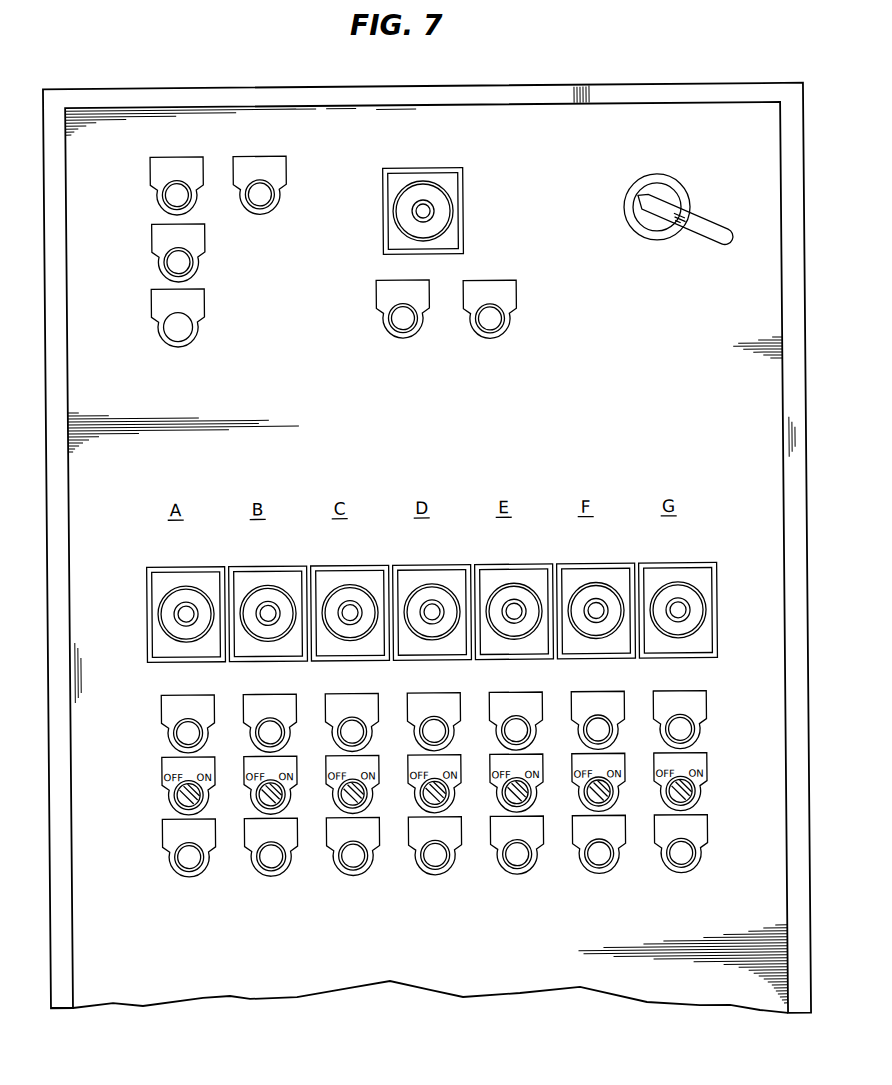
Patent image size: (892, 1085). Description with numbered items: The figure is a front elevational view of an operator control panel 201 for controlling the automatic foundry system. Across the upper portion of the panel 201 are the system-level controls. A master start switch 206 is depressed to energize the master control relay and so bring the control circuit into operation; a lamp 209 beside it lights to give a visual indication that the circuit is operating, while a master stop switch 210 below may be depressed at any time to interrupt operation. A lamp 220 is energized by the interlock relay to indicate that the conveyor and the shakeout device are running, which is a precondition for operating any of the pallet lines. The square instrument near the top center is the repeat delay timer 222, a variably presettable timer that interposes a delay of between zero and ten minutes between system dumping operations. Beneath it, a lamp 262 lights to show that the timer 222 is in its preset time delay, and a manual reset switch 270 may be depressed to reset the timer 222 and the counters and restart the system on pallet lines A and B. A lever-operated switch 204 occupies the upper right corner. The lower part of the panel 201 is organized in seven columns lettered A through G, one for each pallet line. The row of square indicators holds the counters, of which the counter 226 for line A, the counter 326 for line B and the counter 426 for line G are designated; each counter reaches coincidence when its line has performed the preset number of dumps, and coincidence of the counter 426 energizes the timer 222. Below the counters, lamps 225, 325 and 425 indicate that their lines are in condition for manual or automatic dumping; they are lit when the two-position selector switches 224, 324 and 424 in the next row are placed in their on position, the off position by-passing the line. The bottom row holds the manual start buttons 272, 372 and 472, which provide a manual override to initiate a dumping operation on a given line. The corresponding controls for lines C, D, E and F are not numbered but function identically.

The control panel 201 is at (531, 56).
The key-operated power switch 204 is at (695, 243).
The master start switch 206 is at (183, 258).
The lamp 209 is at (178, 195).
The master stop switch 210 is at (185, 328).
The lamp 220 is at (265, 195).
The repeat delay timer 222 is at (428, 213).
The lamp 262 is at (406, 320).
The manual reset switch 270 is at (494, 320).
The counter 226 is at (185, 610).
The counter 326 is at (266, 610).
The counter 426 is at (678, 608).
The lamp 225 is at (184, 731).
The lamp 325 is at (267, 726).
The lamp 425 is at (683, 728).
The two-position selector switch 224 is at (184, 795).
The selector switch 324 is at (266, 796).
The selector switch 424 is at (683, 799).
The manual start button 272 is at (183, 858).
The manual start button 372 is at (267, 859).
The manual start button 472 is at (682, 862).